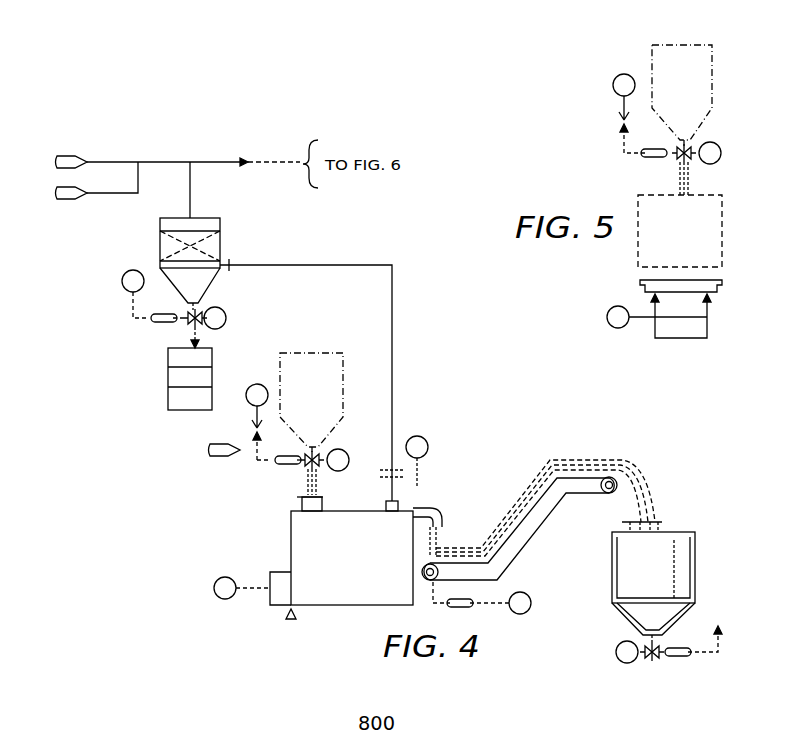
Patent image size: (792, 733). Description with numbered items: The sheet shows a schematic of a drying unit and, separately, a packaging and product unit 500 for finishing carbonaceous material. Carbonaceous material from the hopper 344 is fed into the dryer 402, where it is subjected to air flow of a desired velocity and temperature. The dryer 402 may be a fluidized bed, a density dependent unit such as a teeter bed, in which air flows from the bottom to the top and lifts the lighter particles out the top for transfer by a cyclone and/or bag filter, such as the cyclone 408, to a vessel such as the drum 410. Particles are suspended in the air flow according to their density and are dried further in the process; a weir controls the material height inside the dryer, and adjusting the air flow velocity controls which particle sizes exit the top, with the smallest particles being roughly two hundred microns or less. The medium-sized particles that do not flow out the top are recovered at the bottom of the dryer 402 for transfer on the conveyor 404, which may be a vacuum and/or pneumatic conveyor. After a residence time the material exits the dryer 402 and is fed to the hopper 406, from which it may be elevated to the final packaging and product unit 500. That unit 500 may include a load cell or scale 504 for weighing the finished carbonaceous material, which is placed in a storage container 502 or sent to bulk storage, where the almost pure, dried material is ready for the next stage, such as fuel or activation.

In FIG. 4, the hopper 344 is at (329, 406).
In FIG. 4, the dryer 402 is at (370, 573).
In FIG. 4, the conveyor 404 is at (524, 542).
In FIG. 4, the hopper 406 is at (676, 532).
In FIG. 5, the hopper 406 is at (700, 104).
In FIG. 4, the cyclone 408 is at (158, 247).
In FIG. 4, the drum 410 is at (168, 378).
In FIG. 5, the packaging and product unit 500 is at (697, 195).
In FIG. 5, the storage container 502 is at (698, 247).
In FIG. 5, the load cell or scale 504 is at (703, 327).